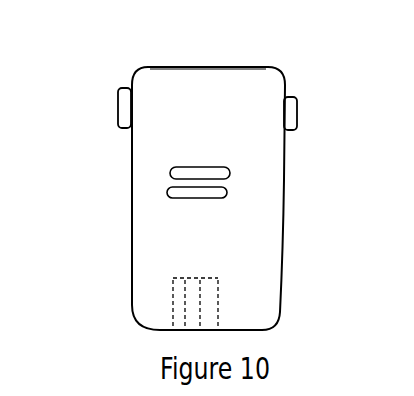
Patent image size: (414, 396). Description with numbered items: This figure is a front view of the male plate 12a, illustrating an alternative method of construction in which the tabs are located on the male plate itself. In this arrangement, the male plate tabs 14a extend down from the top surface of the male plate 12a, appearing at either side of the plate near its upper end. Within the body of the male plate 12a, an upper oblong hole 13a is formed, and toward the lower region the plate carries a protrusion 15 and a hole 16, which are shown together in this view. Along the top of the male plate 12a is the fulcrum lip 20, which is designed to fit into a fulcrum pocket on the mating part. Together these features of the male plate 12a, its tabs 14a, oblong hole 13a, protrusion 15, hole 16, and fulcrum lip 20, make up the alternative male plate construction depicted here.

The male plate 12a is at (163, 245).
The upper oblong hole 13a is at (228, 168).
The male plate tabs 14a is at (128, 110).
The protrusion 15 is at (212, 312).
The hole 16 is at (193, 293).
The fulcrum lip 20 is at (207, 67).